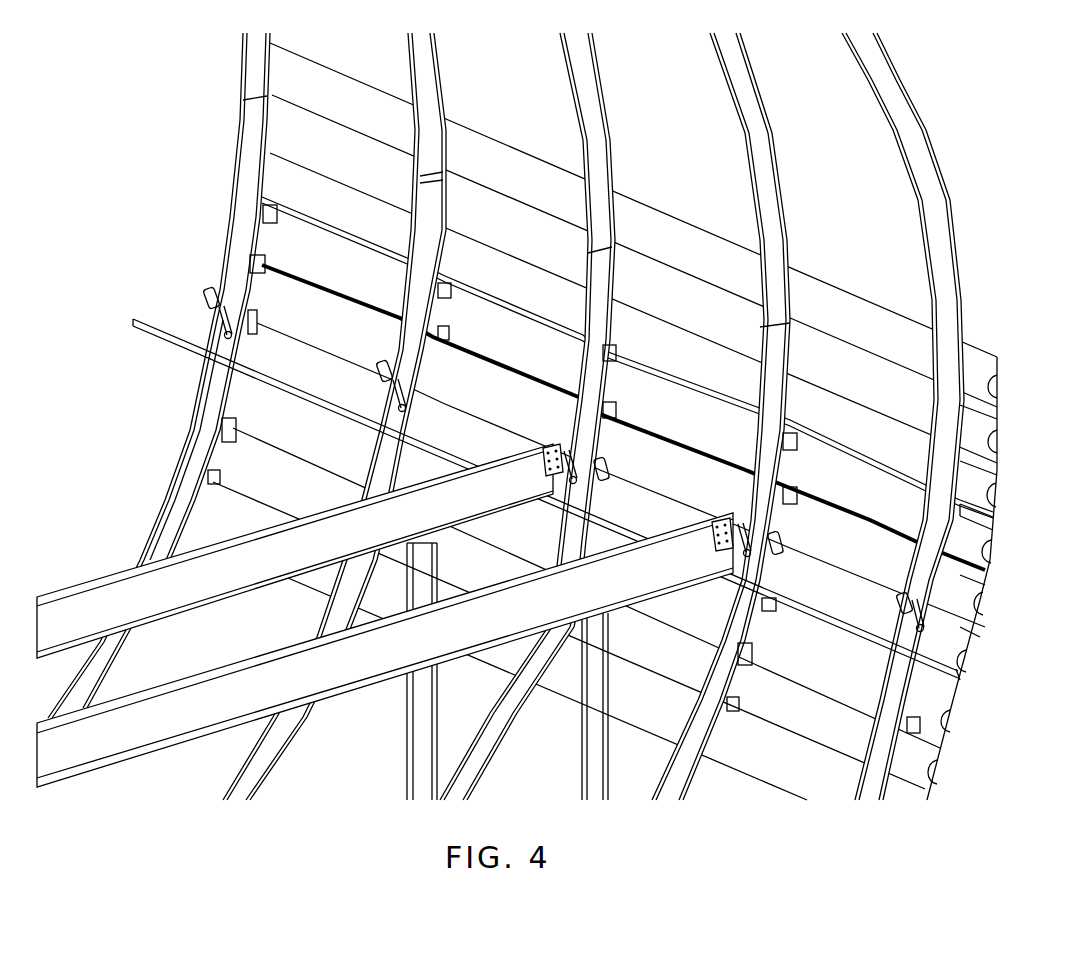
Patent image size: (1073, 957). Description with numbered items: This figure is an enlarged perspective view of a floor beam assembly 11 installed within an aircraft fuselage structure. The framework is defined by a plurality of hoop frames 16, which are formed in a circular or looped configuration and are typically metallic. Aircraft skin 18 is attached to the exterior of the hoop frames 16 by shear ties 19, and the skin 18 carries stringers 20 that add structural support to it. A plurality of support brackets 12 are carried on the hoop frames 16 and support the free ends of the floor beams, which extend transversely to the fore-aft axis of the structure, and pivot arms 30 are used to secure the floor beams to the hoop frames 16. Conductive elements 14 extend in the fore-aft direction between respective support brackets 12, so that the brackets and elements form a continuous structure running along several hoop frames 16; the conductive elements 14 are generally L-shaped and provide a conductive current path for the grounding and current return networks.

The floor beam assembly 11 is at (178, 359).
The support bracket 12 is at (202, 318).
The conductive element 14 is at (155, 317).
The hoop frame 16 is at (945, 293).
The aircraft skin 18 is at (883, 223).
The shear tie 19 is at (980, 512).
The stringer 20 is at (973, 377).
The pivot arm 30 is at (925, 606).